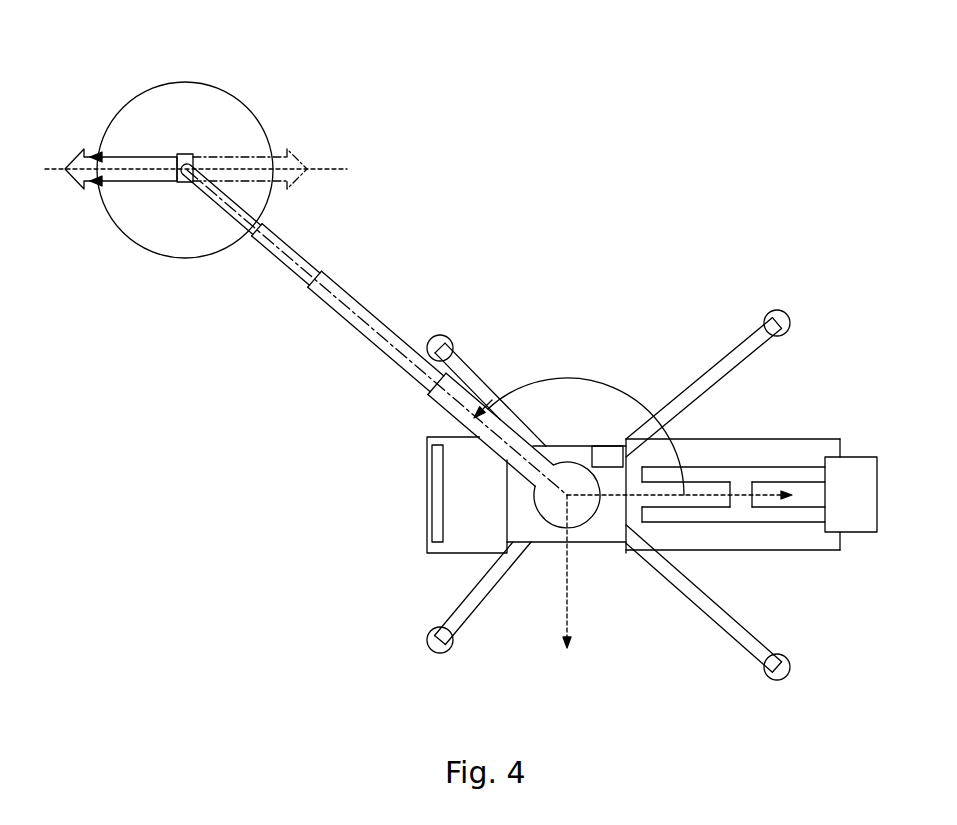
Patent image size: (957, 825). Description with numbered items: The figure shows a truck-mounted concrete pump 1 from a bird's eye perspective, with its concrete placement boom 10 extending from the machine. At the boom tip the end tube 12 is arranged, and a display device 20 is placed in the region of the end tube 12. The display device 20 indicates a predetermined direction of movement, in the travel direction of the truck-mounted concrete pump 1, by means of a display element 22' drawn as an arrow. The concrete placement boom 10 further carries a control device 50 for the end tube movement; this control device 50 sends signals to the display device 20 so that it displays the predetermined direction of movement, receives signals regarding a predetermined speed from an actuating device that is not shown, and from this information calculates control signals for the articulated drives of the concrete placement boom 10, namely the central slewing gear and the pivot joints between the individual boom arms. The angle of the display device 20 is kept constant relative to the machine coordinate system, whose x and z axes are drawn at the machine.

The truck-mounted concrete pump 1 is at (642, 278).
The concrete placement boom 10 is at (350, 330).
The end tube 12 is at (193, 154).
The display device 20 is at (130, 128).
The display element 22' is at (186, 192).
The control device 50 is at (610, 462).